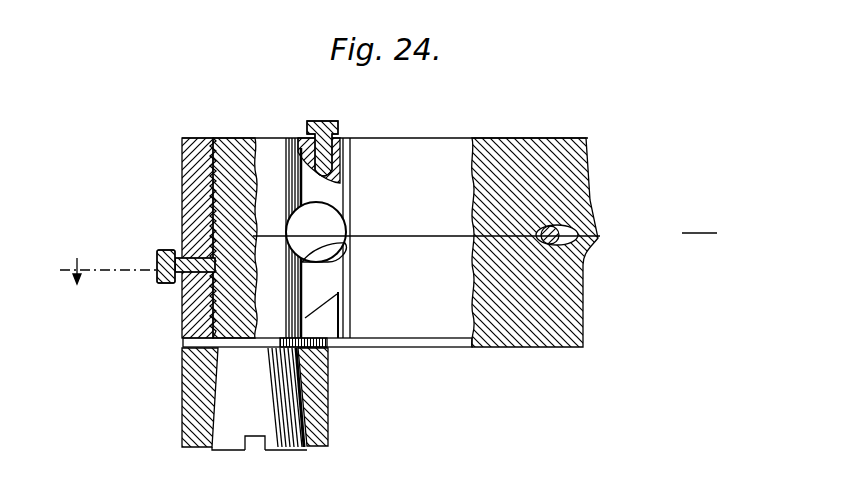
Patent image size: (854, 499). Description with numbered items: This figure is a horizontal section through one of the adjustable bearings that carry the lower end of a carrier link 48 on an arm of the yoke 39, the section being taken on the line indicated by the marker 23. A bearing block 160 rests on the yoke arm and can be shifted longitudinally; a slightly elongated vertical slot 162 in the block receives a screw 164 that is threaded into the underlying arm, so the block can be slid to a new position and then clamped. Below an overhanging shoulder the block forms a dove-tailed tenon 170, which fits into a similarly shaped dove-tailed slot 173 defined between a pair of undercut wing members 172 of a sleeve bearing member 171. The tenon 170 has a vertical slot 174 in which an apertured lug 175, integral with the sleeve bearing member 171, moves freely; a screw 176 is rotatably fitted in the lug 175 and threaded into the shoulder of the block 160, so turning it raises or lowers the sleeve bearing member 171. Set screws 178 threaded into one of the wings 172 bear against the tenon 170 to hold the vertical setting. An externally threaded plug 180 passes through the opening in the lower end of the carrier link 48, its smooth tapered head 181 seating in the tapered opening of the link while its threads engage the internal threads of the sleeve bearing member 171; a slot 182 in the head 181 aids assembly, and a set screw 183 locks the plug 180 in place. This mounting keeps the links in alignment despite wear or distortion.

The sleeve bearing member 171 is at (278, 143).
The externally threaded plug 180 is at (250, 134).
The set screw 183 is at (160, 282).
The dove-tailed shaped slot 173 is at (307, 257).
The tenon 170 is at (325, 283).
The wing members 172 is at (335, 153).
The set screws 178 is at (345, 101).
The screw 176 is at (328, 217).
The vertical slot 174 is at (335, 258).
The apertured lug 175 is at (313, 312).
The bearing block 160 is at (553, 128).
The vertical slot 162 is at (578, 234).
The screw 164 is at (547, 233).
The section line 23 is at (386, 255).
The yoke 39 is at (455, 330).
The carrier links 48 is at (331, 402).
The tapered head 181 is at (217, 452).
The slot 182 is at (260, 442).